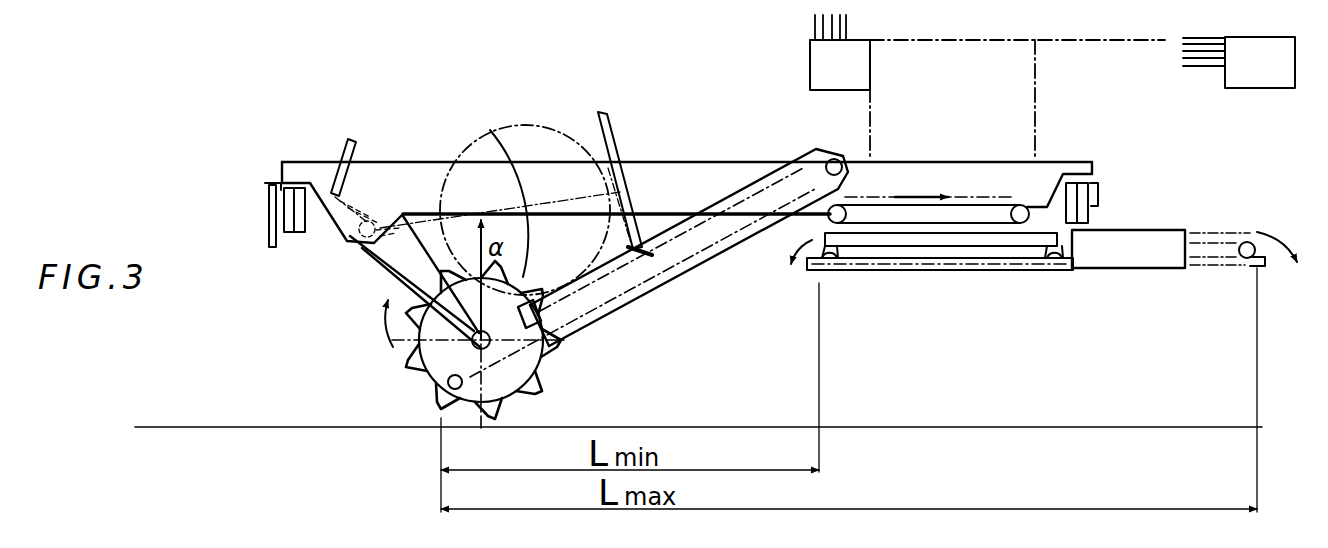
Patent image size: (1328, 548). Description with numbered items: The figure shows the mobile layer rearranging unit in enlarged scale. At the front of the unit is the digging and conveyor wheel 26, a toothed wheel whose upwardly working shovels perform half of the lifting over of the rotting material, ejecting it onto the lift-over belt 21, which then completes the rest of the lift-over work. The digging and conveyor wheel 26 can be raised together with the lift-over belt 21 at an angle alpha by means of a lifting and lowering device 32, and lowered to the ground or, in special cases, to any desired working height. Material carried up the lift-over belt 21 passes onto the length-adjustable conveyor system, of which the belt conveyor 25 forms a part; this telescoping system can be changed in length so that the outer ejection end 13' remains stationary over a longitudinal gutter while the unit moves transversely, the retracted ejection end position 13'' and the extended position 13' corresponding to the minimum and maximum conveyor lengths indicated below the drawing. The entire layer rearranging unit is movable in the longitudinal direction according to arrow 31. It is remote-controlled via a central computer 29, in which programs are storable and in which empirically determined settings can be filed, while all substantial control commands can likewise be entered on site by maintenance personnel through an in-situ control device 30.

The outer ejection end 13' is at (1188, 346).
The ejection end retracted position 13'' is at (832, 356).
The lift-over belt 21 is at (658, 284).
The belt conveyor 25 is at (988, 278).
The digging and conveyor wheel 26 is at (546, 383).
The central computer 29 is at (1239, 62).
The in-situ control device 30 is at (987, 87).
The longitudinal movement arrow 31 is at (478, 90).
The lifting and lowering device 32 is at (610, 140).